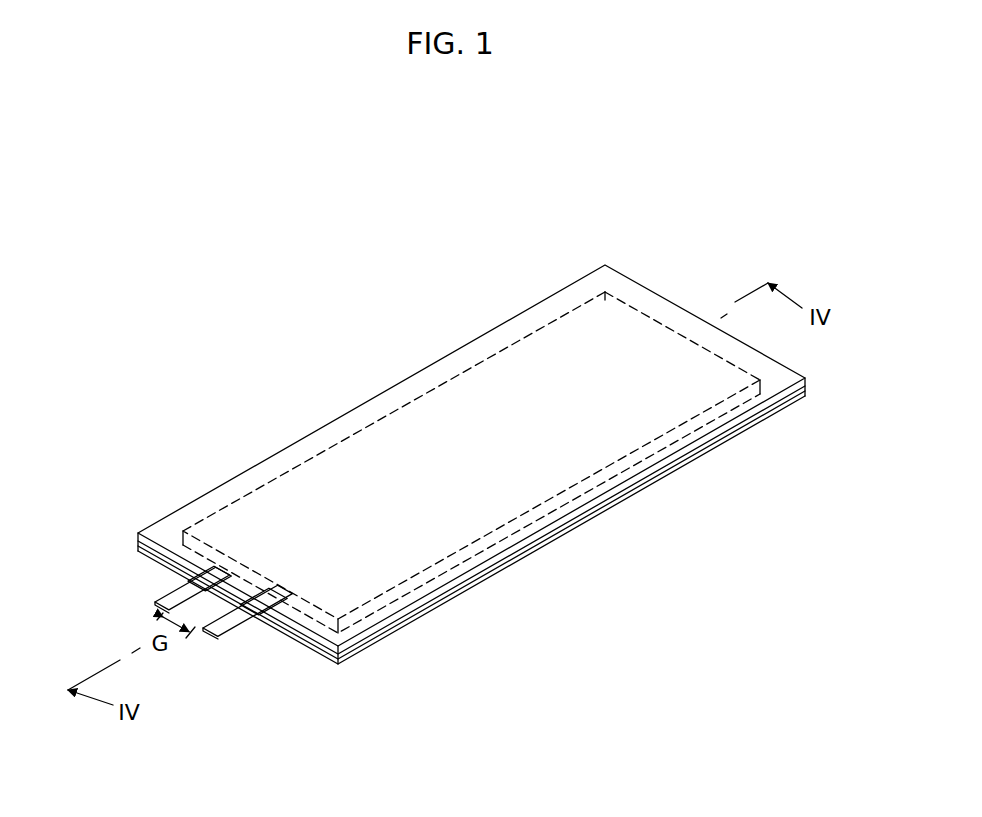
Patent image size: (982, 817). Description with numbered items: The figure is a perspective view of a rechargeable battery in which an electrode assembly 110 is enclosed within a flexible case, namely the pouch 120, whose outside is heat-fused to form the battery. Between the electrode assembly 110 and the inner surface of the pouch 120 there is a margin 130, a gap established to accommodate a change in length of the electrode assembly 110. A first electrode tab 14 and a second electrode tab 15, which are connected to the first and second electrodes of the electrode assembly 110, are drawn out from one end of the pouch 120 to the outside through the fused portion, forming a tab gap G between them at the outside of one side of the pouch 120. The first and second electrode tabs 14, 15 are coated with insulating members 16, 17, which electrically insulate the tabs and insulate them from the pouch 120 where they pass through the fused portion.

The electrode assembly 110 is at (412, 403).
The pouch 120 is at (530, 307).
The margin 130 is at (632, 311).
The first electrode tab 14 is at (225, 633).
The second electrode tab 15 is at (157, 601).
The insulating member 16 is at (252, 610).
The insulating member 17 is at (193, 583).